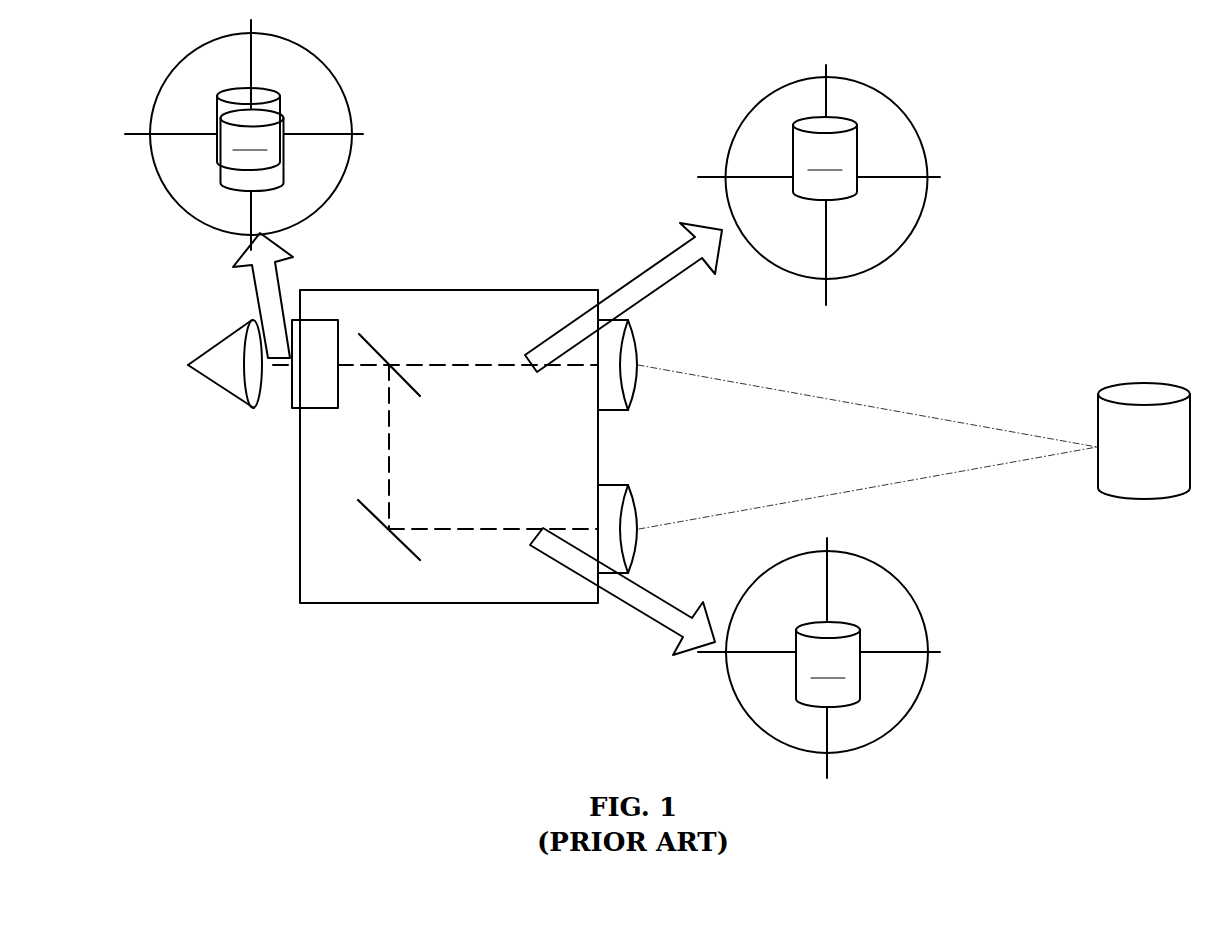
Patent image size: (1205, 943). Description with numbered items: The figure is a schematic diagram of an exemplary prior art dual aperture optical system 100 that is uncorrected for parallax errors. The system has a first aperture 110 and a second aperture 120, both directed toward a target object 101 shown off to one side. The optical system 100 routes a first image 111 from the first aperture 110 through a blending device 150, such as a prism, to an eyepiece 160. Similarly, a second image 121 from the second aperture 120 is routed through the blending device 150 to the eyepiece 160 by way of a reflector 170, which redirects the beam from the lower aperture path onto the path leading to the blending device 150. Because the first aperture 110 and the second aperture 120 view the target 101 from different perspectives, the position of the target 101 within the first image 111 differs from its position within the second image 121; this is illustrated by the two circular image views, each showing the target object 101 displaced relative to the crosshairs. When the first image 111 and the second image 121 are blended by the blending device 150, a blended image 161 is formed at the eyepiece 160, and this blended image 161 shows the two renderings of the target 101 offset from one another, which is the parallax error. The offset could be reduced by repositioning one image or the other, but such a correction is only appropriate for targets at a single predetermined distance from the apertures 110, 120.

The dual aperture optical system 100 is at (333, 668).
The target object 101 is at (1125, 458).
The first aperture 110 is at (613, 403).
The first image 111 is at (900, 120).
The second aperture 120 is at (633, 502).
The second image 121 is at (905, 598).
The blending device 150 is at (377, 350).
The eyepiece 160 is at (298, 374).
The blended image 161 is at (323, 73).
The reflector 170 is at (370, 515).